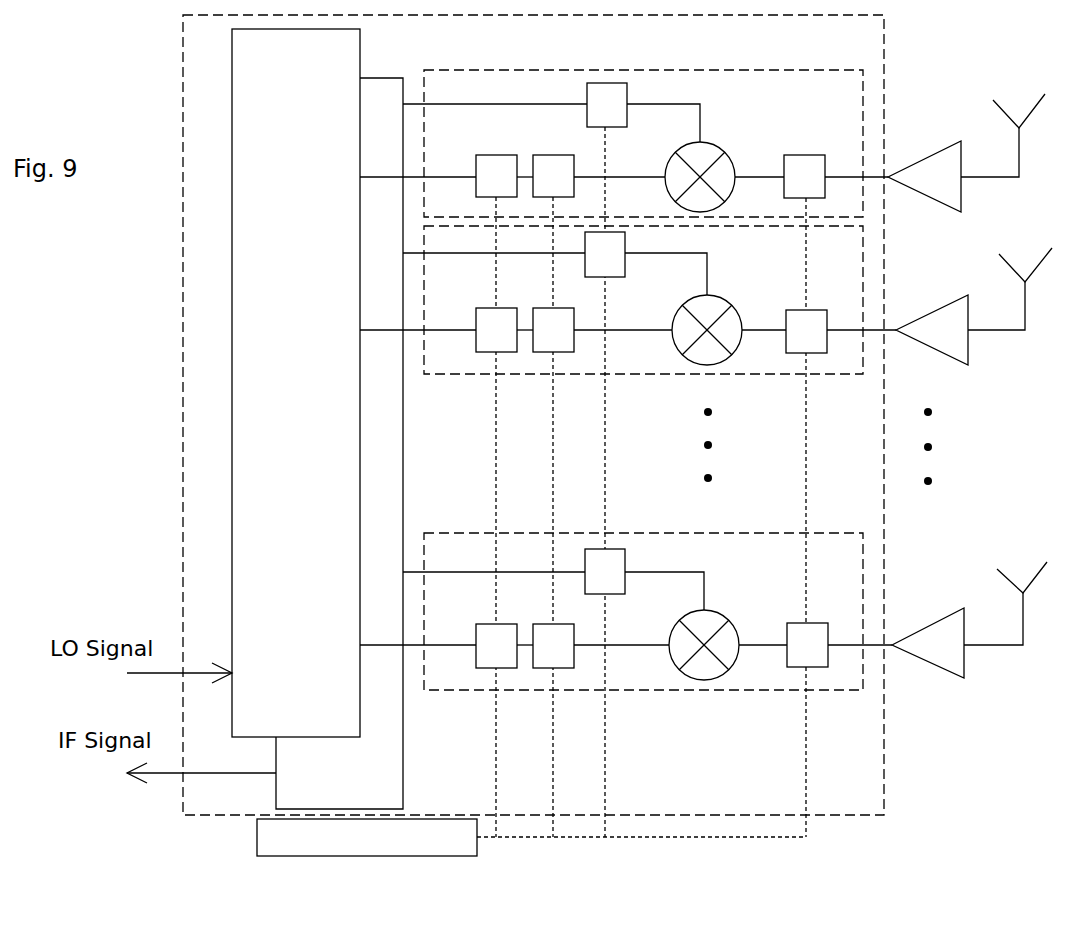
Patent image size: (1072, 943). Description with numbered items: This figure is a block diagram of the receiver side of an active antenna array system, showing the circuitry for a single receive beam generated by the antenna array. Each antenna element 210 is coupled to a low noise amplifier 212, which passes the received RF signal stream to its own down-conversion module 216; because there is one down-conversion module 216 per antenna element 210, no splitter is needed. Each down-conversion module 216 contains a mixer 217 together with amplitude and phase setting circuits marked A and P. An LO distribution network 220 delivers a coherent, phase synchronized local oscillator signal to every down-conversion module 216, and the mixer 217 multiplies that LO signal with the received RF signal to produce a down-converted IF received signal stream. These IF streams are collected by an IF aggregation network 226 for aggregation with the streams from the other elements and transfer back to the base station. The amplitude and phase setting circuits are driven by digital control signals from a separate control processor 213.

The antenna element 210 is at (1018, 138).
The low noise amplifier 212 is at (957, 202).
The control processor 213 is at (257, 838).
The down-conversion module 216 is at (660, 380).
The mixer 217 is at (676, 152).
The LO distribution network 220 is at (296, 383).
The IF aggregation network 226 is at (400, 74).